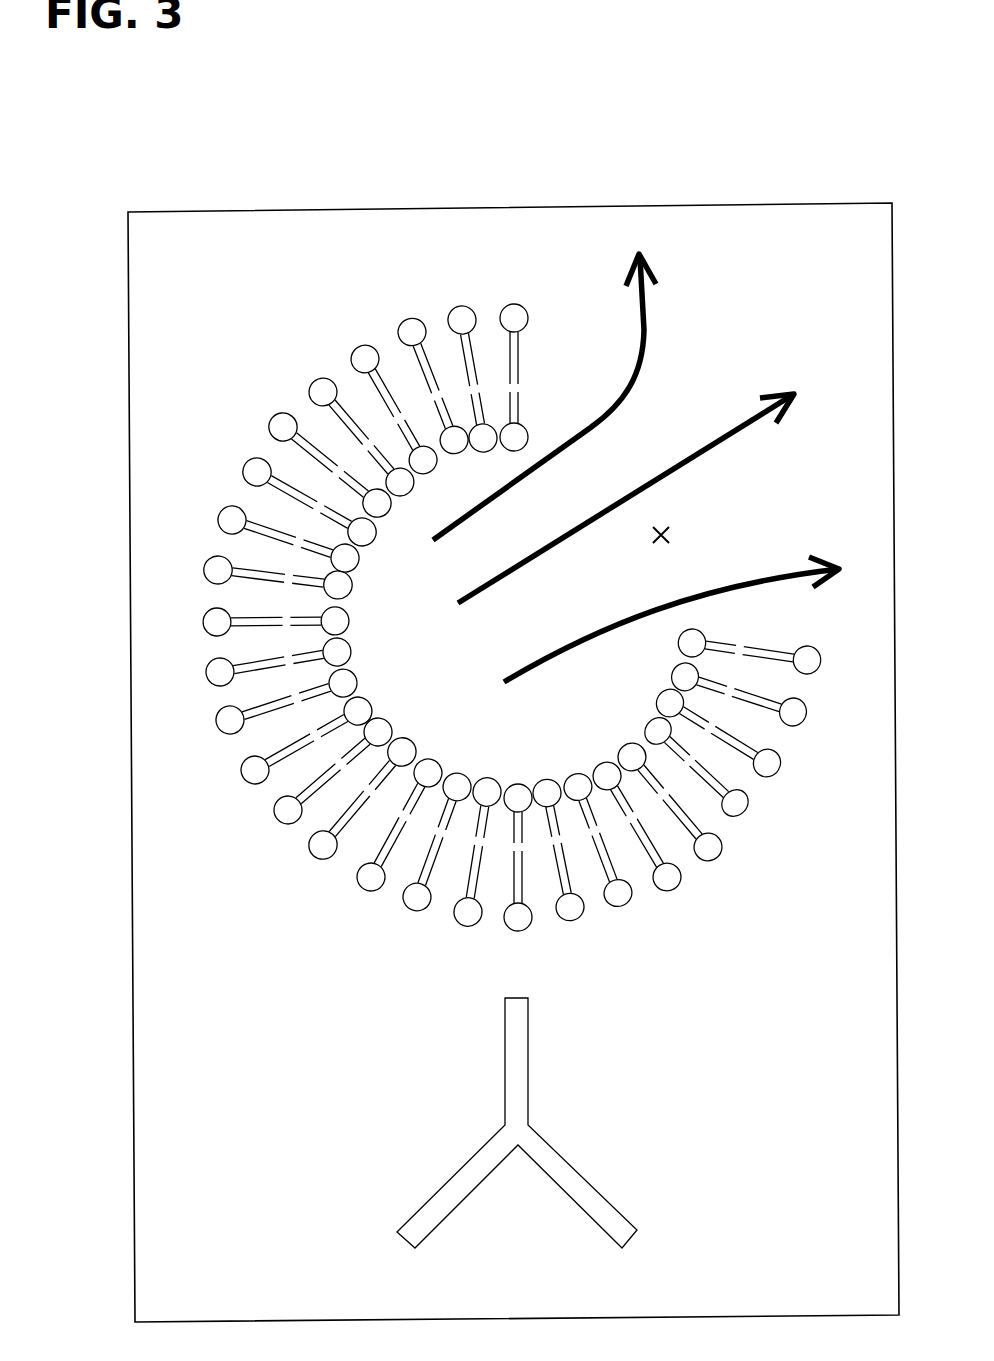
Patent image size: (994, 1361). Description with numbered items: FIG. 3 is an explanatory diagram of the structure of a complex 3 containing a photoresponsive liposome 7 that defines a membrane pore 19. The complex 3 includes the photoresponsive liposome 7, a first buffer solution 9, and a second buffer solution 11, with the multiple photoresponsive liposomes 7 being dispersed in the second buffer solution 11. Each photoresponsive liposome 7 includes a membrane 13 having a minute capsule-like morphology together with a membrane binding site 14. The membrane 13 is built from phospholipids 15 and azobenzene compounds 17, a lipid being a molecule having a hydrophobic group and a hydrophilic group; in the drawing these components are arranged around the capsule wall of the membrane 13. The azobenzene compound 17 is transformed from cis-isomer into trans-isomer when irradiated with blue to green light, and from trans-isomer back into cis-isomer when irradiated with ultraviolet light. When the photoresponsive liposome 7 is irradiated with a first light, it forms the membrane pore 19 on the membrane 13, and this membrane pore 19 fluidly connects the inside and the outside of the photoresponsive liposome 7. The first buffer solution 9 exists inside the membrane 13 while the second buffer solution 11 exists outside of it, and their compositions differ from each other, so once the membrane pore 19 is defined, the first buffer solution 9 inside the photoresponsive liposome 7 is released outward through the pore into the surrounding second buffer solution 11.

The complex 3 is at (775, 205).
The photoresponsive liposome 7 is at (822, 877).
The first buffer solution 9 is at (403, 638).
The second buffer solution 11 is at (248, 263).
The membrane 13 is at (723, 827).
The membrane binding site 14 is at (528, 1066).
The phospholipid 15 is at (385, 318).
The azobenzene compound 17 is at (287, 387).
The membrane pore 19 is at (664, 526).